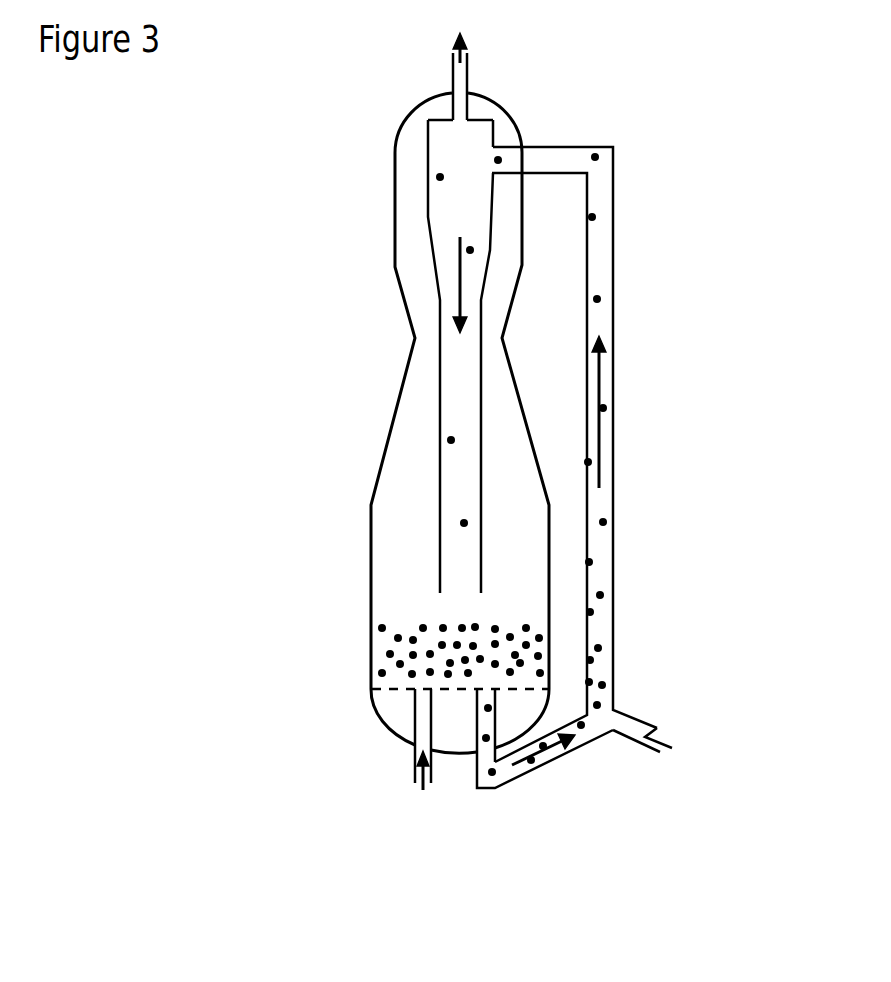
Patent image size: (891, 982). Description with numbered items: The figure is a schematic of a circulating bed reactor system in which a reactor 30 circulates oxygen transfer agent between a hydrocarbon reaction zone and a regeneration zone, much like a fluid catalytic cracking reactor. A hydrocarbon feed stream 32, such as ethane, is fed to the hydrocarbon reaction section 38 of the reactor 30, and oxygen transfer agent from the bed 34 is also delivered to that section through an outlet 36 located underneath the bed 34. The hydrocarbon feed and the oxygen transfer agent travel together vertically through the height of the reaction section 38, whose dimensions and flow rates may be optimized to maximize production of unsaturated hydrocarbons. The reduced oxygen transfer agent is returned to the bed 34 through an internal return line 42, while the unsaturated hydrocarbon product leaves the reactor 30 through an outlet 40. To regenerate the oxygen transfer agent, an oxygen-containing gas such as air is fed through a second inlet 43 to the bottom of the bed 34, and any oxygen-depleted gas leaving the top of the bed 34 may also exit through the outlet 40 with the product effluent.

The reactor 30 is at (398, 398).
The hydrocarbon feed stream 32 is at (670, 735).
The bed 34 is at (413, 655).
The outlet 36 is at (490, 690).
The hydrocarbon reaction section 38 is at (613, 493).
The outlet 40 is at (470, 53).
The internal return line 42 is at (430, 260).
The second inlet 43 is at (415, 772).